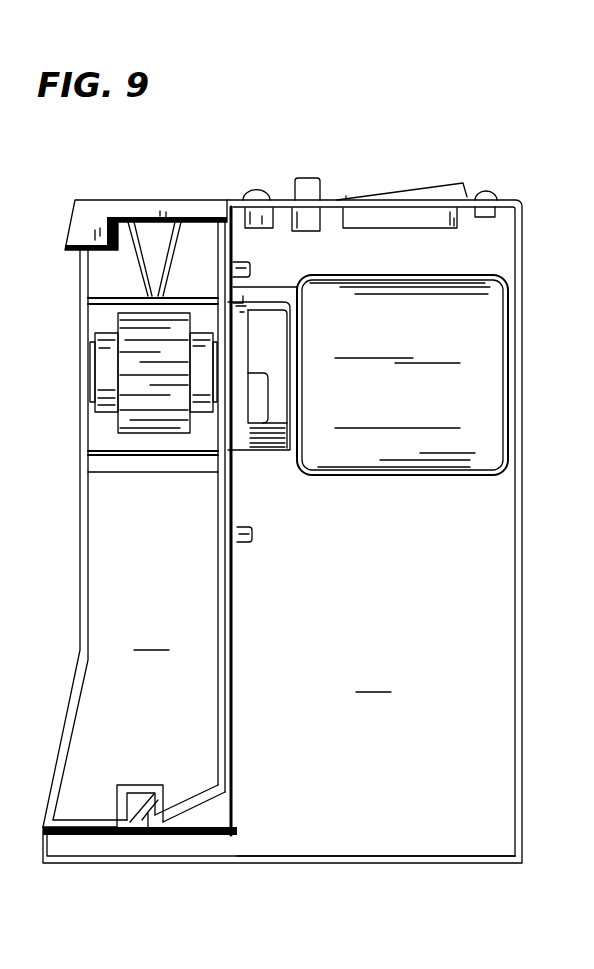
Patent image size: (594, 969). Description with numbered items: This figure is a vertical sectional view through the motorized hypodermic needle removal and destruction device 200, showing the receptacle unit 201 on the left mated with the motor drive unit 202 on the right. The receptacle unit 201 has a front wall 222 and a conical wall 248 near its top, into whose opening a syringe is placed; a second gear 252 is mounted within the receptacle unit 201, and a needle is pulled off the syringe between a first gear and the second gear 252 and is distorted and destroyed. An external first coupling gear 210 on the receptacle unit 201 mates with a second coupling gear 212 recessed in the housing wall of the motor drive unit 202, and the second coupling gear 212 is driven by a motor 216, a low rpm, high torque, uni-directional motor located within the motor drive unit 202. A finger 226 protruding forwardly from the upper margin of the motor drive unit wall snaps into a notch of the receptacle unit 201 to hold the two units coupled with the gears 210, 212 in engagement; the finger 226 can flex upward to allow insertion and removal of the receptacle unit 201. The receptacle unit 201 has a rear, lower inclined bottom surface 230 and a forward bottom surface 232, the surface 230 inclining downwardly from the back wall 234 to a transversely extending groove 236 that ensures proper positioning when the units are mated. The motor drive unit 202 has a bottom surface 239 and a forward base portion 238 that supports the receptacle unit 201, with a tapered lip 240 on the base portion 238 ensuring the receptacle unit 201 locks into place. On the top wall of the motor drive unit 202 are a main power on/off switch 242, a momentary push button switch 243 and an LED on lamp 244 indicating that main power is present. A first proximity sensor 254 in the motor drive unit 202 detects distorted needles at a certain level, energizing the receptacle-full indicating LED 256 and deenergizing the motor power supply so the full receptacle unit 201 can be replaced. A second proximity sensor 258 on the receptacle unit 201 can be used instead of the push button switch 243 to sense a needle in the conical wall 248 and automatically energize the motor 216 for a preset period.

The hypodermic needle removal and destruction device 200 is at (224, 133).
The receptacle unit 201 is at (153, 474).
The motor drive unit 202 is at (374, 531).
The first coupling gear 210 is at (242, 405).
The second coupling gear 212 is at (275, 403).
The motor 216 is at (470, 420).
The front wall 222 is at (76, 478).
The finger 226 is at (83, 212).
The rear, lower inclined bottom surface 230 is at (196, 797).
The forward bottom surface 232 is at (95, 812).
The back wall 234 is at (225, 750).
The groove 236 is at (131, 800).
The forward base portion 238 is at (83, 843).
The bottom surface 239 is at (432, 863).
The tapered lip 240 is at (142, 812).
The main power on/off switch 242 is at (436, 186).
The momentary push button switch 243 is at (314, 178).
The LED on lamp 244 is at (262, 186).
The conical wall 248 is at (165, 248).
The second gear 252 is at (142, 368).
The first proximity sensor 254 is at (255, 537).
The receptacle-full indicating LED 256 is at (495, 192).
The second proximity sensor 258 is at (252, 273).